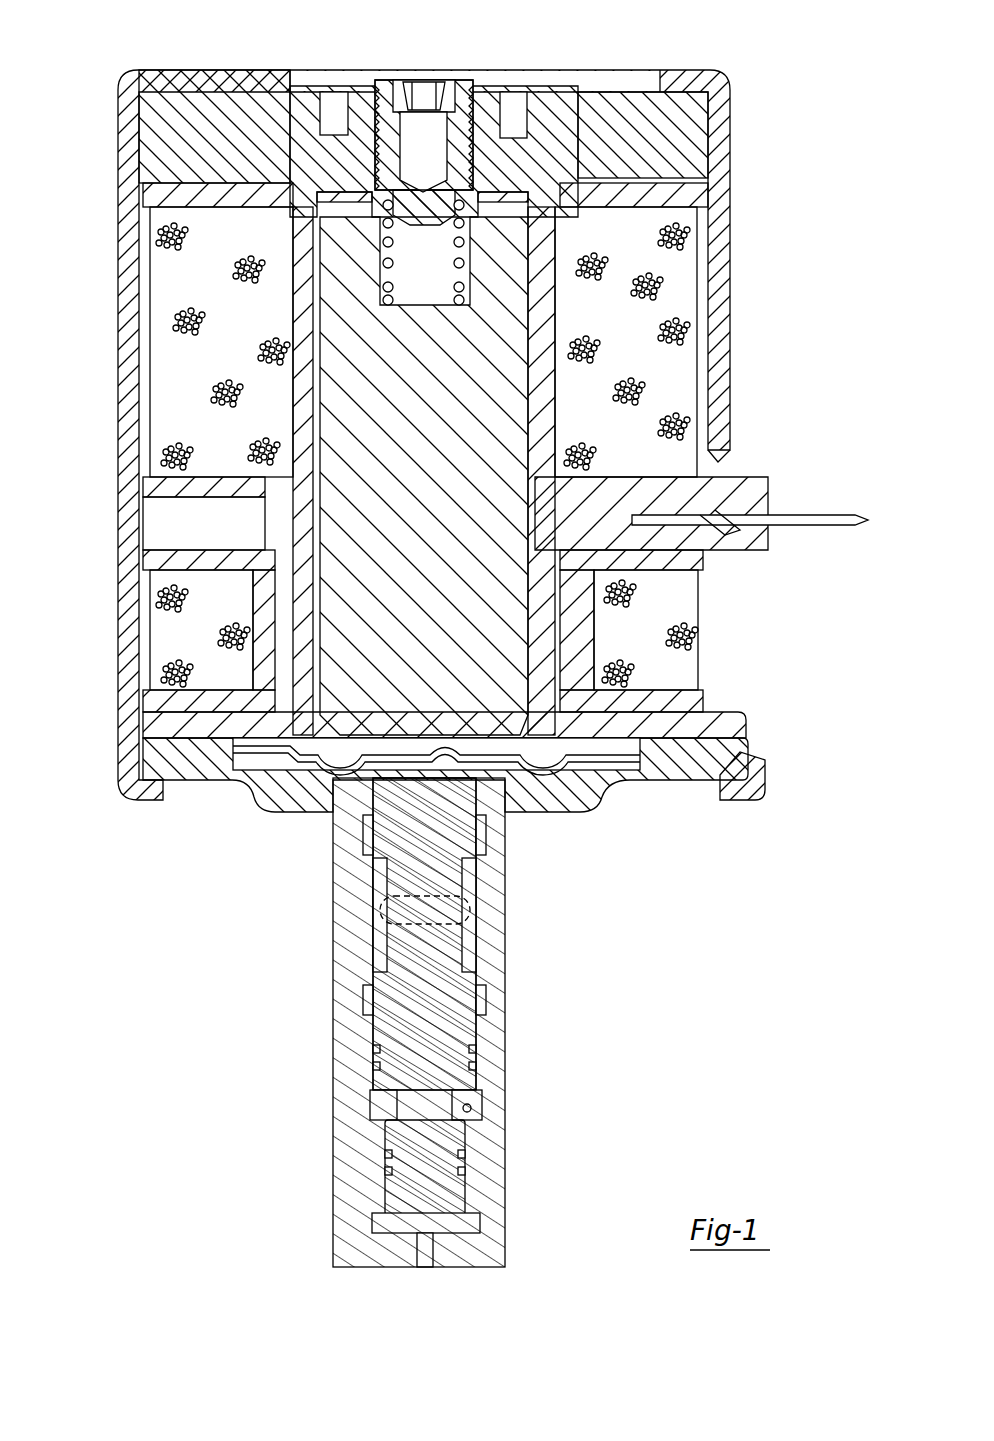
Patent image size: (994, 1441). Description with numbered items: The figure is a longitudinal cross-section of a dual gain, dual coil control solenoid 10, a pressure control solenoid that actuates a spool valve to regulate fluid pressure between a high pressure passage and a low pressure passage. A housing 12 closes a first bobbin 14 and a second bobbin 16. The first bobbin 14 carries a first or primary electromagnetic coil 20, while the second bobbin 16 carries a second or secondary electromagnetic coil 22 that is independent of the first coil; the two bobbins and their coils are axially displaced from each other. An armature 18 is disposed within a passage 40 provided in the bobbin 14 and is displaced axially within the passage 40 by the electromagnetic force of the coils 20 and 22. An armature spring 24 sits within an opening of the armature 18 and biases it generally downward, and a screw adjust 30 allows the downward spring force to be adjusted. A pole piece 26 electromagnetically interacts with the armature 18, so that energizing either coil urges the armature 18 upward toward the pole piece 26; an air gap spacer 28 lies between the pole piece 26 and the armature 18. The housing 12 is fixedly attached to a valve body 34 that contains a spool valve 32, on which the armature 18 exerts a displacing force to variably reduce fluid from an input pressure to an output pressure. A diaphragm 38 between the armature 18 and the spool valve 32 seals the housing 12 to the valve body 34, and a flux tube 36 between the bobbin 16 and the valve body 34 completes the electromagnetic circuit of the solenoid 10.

The dual gain control solenoid 10 is at (75, 92).
The housing 12 is at (120, 482).
The first bobbin 14 is at (680, 190).
The second bobbin 16 is at (700, 587).
The armature 18 is at (335, 397).
The first electromagnetic coil 20 is at (650, 315).
The second electromagnetic coil 22 is at (690, 648).
The armature spring 24 is at (520, 280).
The pole piece 26 is at (540, 96).
The air gap spacer 28 is at (325, 190).
The screw adjust 30 is at (385, 86).
The spool valve 32 is at (455, 1018).
The valve body 34 is at (495, 1173).
The flux tube 36 is at (715, 722).
The diaphragm 38 is at (600, 790).
The passage 40 is at (700, 440).